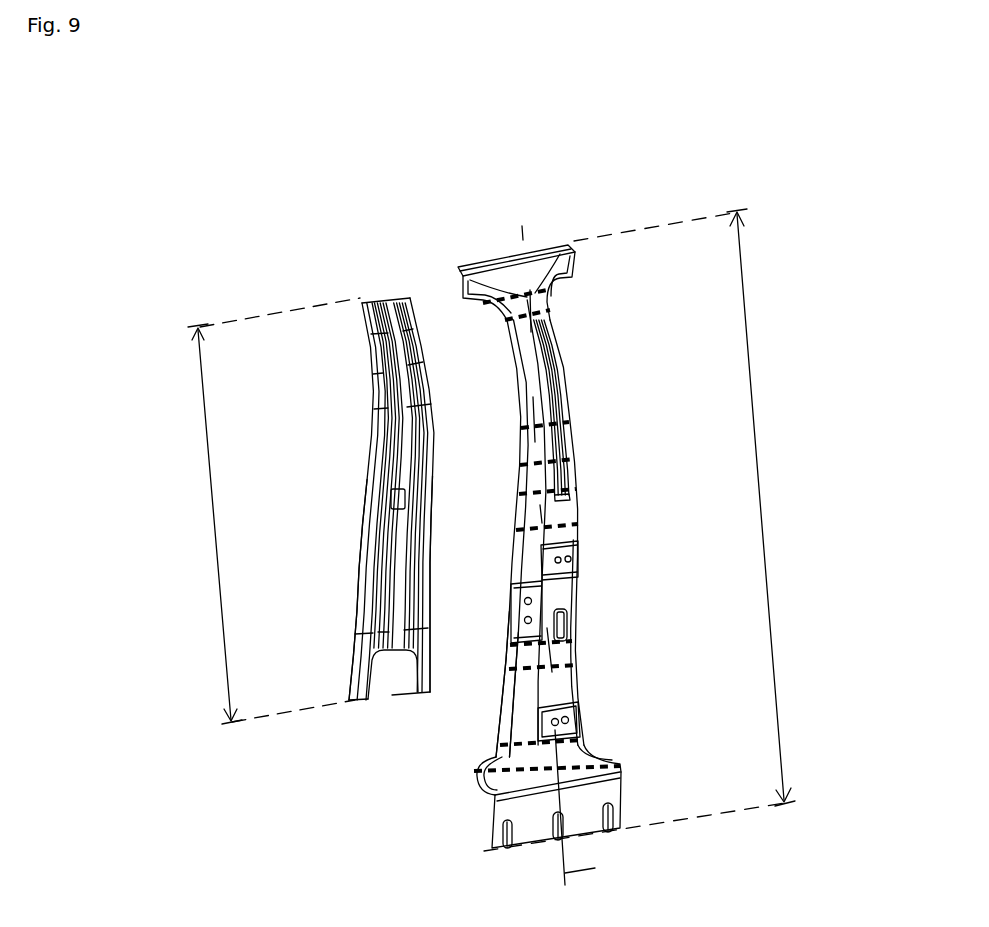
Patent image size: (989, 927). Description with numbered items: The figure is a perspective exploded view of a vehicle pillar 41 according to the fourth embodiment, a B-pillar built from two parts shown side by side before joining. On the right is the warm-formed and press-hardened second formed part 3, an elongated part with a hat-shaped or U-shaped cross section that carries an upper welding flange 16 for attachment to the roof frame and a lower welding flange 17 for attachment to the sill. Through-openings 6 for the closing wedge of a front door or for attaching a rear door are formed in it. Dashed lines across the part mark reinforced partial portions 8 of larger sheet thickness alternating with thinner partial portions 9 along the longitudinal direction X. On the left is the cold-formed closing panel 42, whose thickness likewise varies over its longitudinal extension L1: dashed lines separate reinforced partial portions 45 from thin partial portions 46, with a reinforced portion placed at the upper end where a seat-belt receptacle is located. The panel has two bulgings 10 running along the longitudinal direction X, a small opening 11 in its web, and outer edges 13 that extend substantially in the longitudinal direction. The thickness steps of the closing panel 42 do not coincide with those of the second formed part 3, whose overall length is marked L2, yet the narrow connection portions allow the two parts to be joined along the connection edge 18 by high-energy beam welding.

The second formed part 3 is at (567, 356).
The through-openings 6 is at (567, 560).
The reinforced partial portions 8 is at (560, 295).
The thinner partial portions 9 is at (575, 394).
The bulgings 10 is at (368, 303).
The opening in trim 11 is at (398, 490).
The outer edges 13 is at (430, 575).
The upper welding flange 16 is at (568, 244).
The lower welding flange 17 is at (612, 795).
The connection edge 18 is at (495, 707).
The vehicle pillar 41 is at (590, 153).
The closing panel 42 is at (360, 298).
The reinforced partial portions 45 is at (367, 318).
The thin partial portions 46 is at (372, 355).
The longitudinal extension L1 is at (212, 503).
The length of pillar reinforcement L2 is at (763, 537).
The longitudinal direction X is at (585, 813).